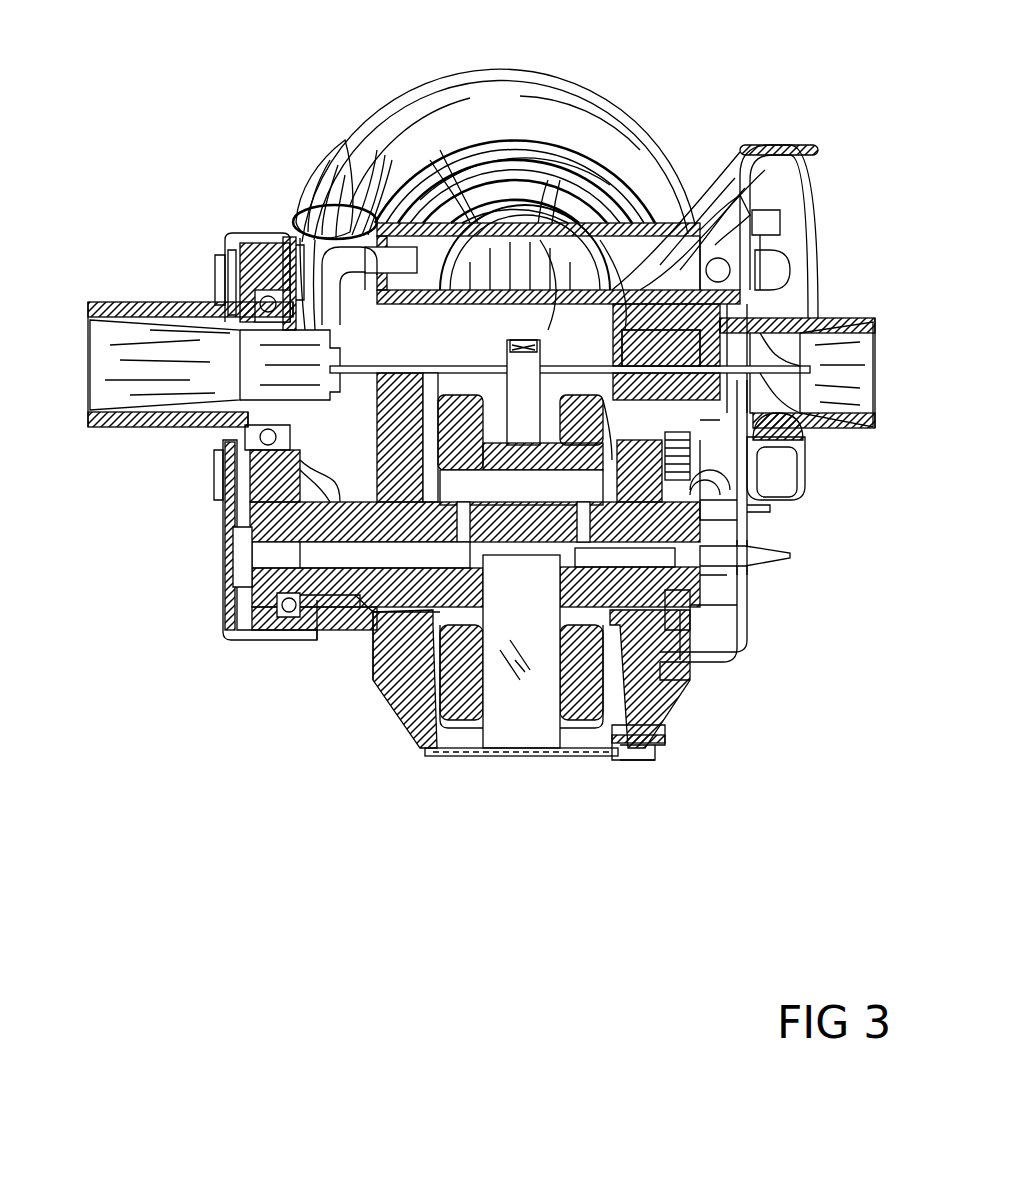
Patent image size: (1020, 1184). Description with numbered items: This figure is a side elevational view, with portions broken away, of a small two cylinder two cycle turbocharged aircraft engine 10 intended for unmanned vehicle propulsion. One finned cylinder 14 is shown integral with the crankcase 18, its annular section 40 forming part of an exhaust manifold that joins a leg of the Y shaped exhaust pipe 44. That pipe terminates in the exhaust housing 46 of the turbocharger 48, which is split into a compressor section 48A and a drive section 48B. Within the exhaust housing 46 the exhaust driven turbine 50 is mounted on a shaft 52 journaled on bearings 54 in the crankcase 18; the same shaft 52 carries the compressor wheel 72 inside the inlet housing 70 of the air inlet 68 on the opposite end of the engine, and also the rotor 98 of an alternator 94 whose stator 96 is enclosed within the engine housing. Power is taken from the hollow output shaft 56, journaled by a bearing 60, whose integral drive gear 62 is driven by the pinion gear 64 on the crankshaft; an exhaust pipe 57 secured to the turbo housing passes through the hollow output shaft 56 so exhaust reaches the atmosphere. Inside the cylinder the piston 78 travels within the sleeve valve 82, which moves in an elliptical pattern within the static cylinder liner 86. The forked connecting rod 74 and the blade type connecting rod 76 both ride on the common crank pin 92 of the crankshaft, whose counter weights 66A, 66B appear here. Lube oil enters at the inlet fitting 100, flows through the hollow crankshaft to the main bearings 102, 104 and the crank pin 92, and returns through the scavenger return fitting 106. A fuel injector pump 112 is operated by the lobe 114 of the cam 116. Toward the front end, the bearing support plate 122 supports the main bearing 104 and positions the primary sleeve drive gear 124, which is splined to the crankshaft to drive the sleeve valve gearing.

The engine 10 is at (740, 600).
The cylinder 14 is at (481, 130).
The crankcase 18 is at (430, 735).
The annular section 40 is at (520, 100).
The Y shaped exhaust pipe 44 is at (300, 175).
The exhaust housing 46 is at (350, 170).
The turbocharger 48 is at (305, 200).
The compressor section 48A is at (765, 310).
The drive section 48B is at (325, 240).
The exhaust driven turbine 50 is at (225, 295).
The shaft 52 is at (240, 580).
The bearings 54 is at (245, 540).
The hollow output shaft 56 is at (165, 300).
The exhaust pipe 57 is at (100, 300).
The bearing 60 is at (235, 480).
The drive gear 62 is at (255, 245).
The pinion gear 64 is at (235, 625).
The counter weight 66A is at (455, 730).
The counter weight 66B is at (580, 730).
The air inlet 68 is at (872, 375).
The inlet housing 70 is at (830, 310).
The compressor wheel 72 is at (845, 318).
The connecting rod 74 is at (690, 165).
The connecting rod 76 is at (705, 175).
The piston 78 is at (445, 150).
The sleeve valve 82 is at (550, 190).
The cylinder liner 86 is at (615, 200).
The crank pin 92 is at (390, 575).
The alternator 94 is at (790, 240).
The stator 96 is at (760, 150).
The rotor 98 is at (760, 180).
The lube oil inlet fitting 100 is at (770, 560).
The main bearing 102 is at (380, 670).
The main bearing 104 is at (665, 710).
The return fitting 106 is at (650, 765).
The fuel injector pump 112 is at (844, 470).
The lobe 114 is at (735, 640).
The cam 116 is at (755, 470).
The bearing support plate 122 is at (745, 560).
The primary sleeve drive gear 124 is at (680, 650).